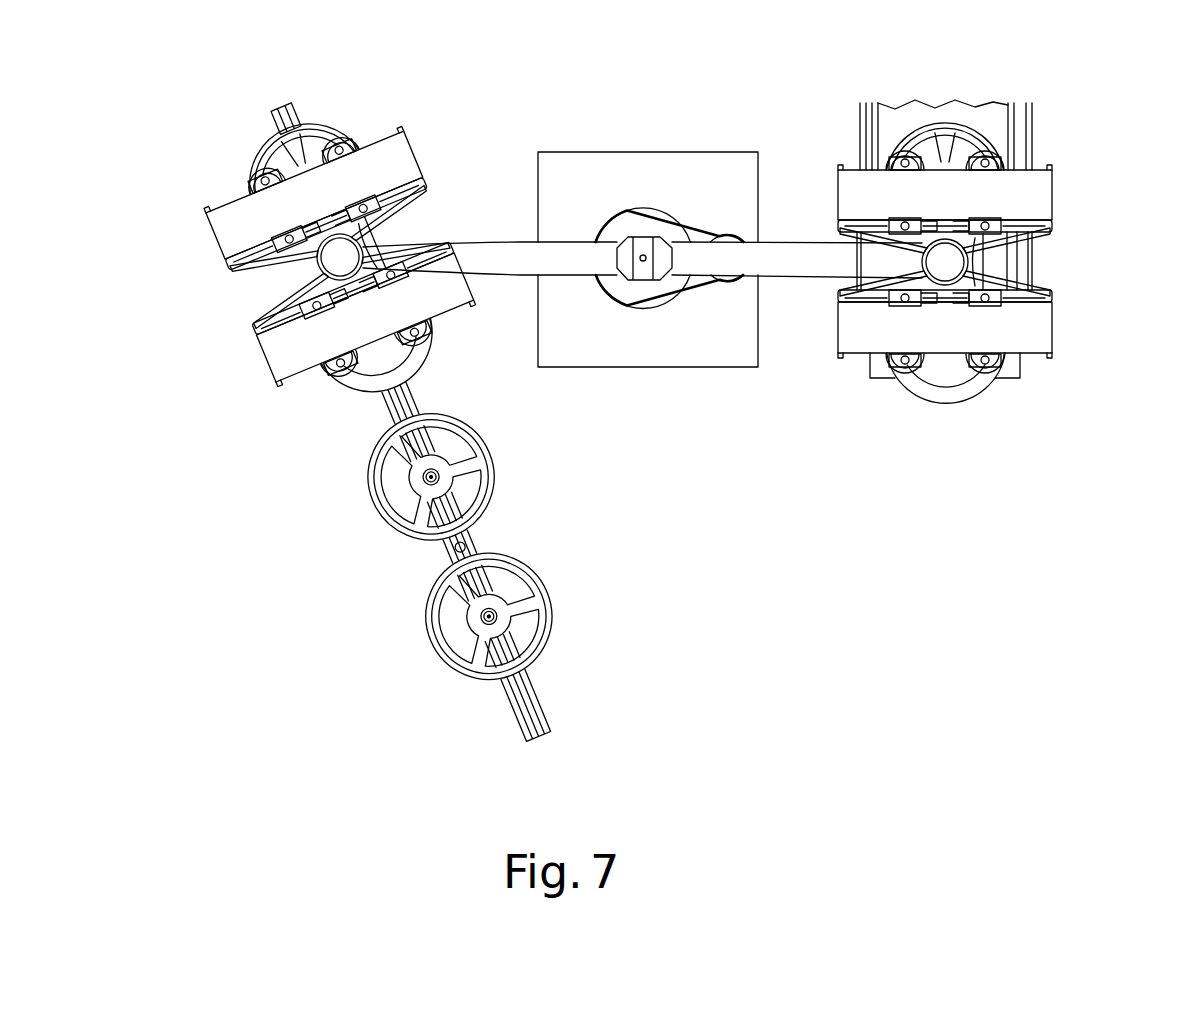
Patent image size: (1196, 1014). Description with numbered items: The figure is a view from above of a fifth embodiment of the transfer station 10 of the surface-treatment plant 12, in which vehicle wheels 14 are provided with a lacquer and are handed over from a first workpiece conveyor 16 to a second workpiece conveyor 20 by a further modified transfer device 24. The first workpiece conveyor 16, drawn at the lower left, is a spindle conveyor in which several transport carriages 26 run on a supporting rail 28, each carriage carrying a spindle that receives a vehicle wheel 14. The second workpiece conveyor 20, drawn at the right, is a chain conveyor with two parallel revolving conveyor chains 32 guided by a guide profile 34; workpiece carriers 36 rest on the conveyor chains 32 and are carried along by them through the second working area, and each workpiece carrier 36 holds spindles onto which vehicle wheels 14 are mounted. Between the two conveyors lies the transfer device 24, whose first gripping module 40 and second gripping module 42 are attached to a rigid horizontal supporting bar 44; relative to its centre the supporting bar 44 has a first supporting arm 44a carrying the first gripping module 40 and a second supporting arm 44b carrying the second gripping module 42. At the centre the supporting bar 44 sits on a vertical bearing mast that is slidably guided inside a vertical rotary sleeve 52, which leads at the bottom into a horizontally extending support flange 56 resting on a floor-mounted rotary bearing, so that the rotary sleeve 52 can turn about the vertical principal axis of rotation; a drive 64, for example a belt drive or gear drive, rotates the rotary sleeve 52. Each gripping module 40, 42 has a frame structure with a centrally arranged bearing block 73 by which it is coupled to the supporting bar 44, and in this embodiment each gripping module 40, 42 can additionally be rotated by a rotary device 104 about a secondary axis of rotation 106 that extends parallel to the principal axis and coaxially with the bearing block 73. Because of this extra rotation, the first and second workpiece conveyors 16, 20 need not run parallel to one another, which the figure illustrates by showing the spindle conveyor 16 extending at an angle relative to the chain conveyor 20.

The transfer station 10 is at (970, 322).
The surface-treatment plant 12 is at (318, 425).
The vehicle wheel 14 is at (358, 388).
The first workpiece conveyor 16 is at (501, 714).
The second workpiece conveyor 20 is at (960, 167).
The transfer device 24 is at (642, 342).
The transport carriage 26 is at (486, 537).
The supporting rail 28 is at (524, 597).
The conveyor chain 32 is at (868, 110).
The guide profile 34 is at (874, 113).
The workpiece carrier 36 is at (1016, 265).
The first gripping module 40 is at (250, 369).
The second gripping module 42 is at (1064, 325).
The supporting bar 44 is at (642, 344).
The first supporting arm 44a is at (513, 275).
The second supporting arm 44b is at (814, 278).
The rotary sleeve 52 is at (666, 212).
The support flange 56 is at (645, 237).
The drive 64 is at (729, 239).
The bearing block 73 is at (330, 262).
The rotary device 104 is at (361, 202).
The secondary axis of rotation 106 is at (341, 257).